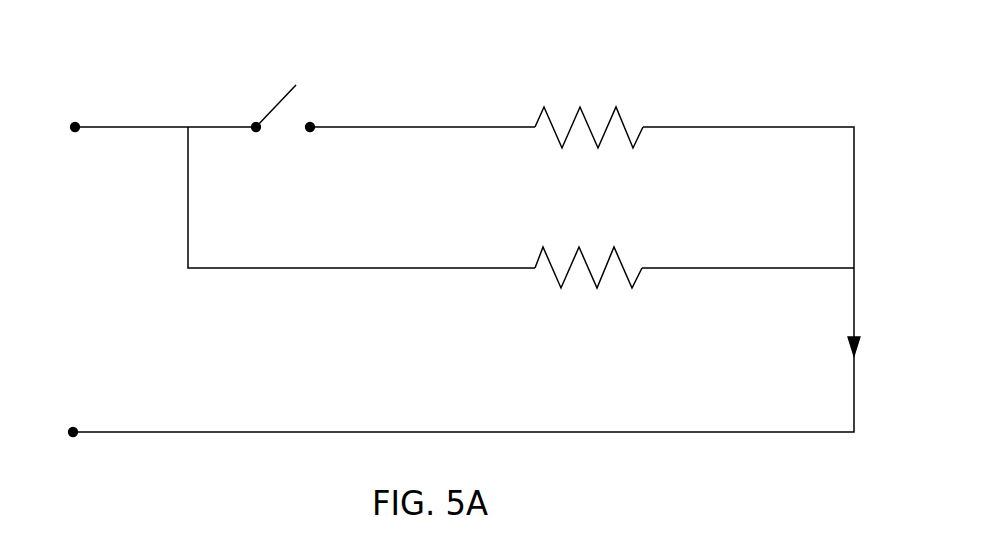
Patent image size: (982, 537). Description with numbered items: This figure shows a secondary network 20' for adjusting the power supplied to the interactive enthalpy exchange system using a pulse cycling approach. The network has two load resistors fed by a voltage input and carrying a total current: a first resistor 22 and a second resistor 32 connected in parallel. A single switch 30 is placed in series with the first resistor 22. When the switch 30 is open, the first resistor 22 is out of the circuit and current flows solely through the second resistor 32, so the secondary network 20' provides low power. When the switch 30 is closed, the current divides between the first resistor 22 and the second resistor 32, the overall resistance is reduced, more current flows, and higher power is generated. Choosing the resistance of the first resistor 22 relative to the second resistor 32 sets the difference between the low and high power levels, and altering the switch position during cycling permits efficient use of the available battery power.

The secondary network 20' is at (461, 226).
The switch S2 30 is at (277, 103).
The first resistor R1 22 is at (582, 105).
The second resistor R2 32 is at (615, 245).